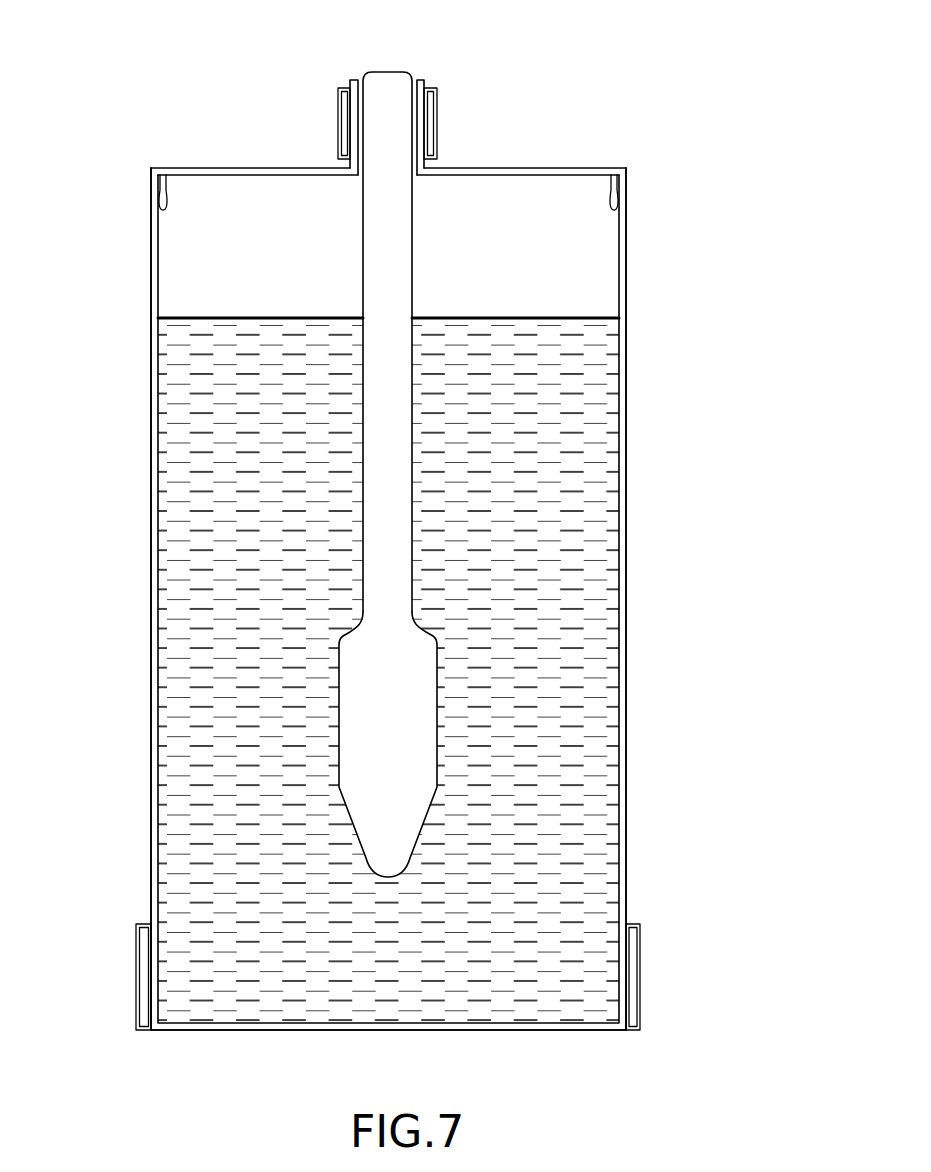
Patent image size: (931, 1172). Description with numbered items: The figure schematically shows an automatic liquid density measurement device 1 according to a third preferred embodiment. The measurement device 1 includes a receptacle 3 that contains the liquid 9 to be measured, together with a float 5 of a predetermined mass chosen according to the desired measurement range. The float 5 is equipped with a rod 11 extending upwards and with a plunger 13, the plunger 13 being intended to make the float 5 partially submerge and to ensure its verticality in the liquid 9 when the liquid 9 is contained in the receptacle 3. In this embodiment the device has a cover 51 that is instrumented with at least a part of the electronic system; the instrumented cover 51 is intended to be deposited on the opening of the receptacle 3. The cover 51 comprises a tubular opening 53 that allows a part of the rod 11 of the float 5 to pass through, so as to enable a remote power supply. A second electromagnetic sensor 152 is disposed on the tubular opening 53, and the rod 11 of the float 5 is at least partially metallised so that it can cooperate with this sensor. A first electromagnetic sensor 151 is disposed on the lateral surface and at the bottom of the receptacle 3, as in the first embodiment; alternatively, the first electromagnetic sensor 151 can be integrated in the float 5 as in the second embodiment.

The measurement device 1 is at (127, 1087).
The receptacle 3 is at (627, 740).
The float 5 is at (446, 445).
The liquid 9 is at (179, 451).
The rod 11 is at (413, 257).
The plunger 13 is at (437, 692).
The cover 51 is at (589, 161).
The tubular opening 53 is at (421, 79).
The first electromagnetic sensor 151 is at (661, 982).
The second electromagnetic sensor 152 is at (454, 126).